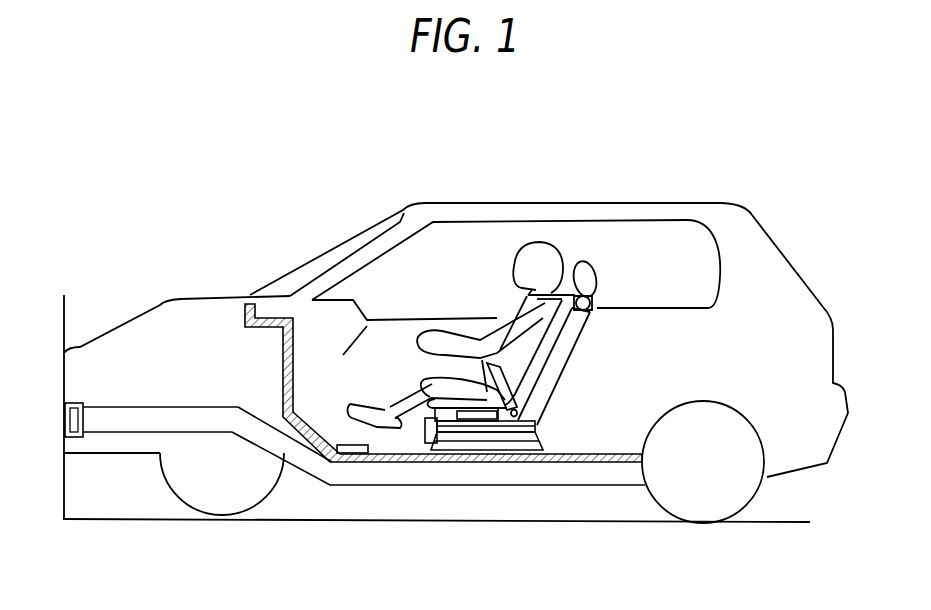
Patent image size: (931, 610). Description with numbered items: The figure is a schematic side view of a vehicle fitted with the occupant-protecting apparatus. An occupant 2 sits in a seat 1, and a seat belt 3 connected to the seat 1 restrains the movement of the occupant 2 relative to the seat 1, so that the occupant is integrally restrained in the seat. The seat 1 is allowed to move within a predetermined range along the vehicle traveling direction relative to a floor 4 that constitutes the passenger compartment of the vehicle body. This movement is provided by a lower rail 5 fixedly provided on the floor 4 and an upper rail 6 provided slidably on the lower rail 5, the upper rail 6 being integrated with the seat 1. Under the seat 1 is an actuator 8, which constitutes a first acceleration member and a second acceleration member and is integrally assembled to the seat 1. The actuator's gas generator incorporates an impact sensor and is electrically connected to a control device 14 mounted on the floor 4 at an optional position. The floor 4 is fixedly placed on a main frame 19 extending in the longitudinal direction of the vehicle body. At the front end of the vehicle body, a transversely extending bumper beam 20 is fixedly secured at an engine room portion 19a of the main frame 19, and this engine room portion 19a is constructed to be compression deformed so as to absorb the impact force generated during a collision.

The seat 1 is at (565, 350).
The occupant 2 is at (500, 332).
The seat belt 3 is at (566, 293).
The floor 4 is at (600, 463).
The lower rail 5 is at (530, 450).
The upper rail 6 is at (497, 432).
The actuator 8 is at (463, 424).
The control device 14 is at (357, 443).
The main frame 19 is at (378, 477).
The engine room portion 19a is at (123, 420).
The bumper beam 20 is at (80, 403).